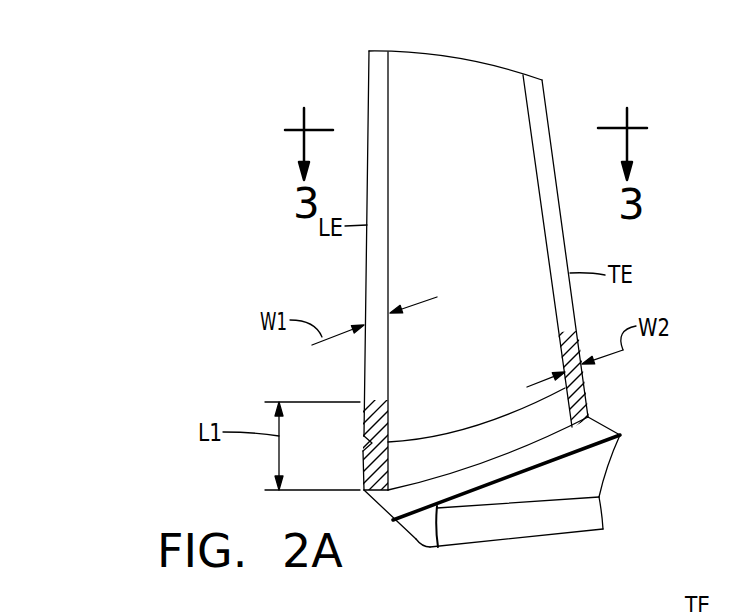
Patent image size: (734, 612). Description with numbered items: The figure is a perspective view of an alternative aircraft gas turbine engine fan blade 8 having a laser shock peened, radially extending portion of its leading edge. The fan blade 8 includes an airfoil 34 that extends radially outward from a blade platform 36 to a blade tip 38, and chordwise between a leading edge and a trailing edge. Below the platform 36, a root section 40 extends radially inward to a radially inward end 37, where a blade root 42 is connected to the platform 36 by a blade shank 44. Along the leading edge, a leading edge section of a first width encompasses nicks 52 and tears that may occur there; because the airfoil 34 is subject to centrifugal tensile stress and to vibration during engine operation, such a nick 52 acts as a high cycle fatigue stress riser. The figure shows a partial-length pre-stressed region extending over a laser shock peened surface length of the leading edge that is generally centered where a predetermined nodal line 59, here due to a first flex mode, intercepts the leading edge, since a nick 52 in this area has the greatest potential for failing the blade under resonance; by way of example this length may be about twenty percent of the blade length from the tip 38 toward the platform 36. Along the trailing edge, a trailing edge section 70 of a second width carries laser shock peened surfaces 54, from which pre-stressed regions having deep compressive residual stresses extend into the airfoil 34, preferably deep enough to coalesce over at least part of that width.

The fan blade 8 is at (580, 66).
The airfoil 34 is at (460, 196).
The blade platform 36 is at (593, 433).
The radially inward end 37 is at (540, 537).
The blade tip 38 is at (457, 58).
The root section 40 is at (598, 497).
The blade root 42 is at (422, 536).
The blade shank 44 is at (602, 468).
The nick 52 is at (363, 438).
The laser shock peened surface 54 is at (375, 470).
The nodal line 59 is at (512, 412).
The trailing edge section 70 is at (558, 250).